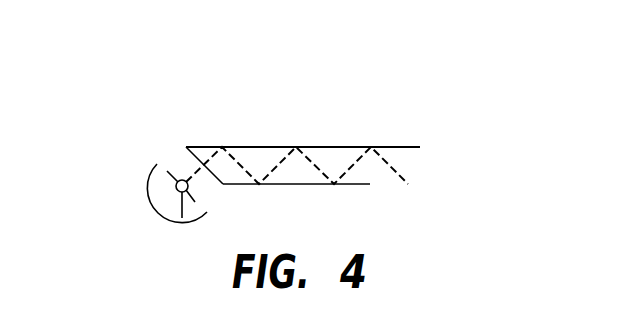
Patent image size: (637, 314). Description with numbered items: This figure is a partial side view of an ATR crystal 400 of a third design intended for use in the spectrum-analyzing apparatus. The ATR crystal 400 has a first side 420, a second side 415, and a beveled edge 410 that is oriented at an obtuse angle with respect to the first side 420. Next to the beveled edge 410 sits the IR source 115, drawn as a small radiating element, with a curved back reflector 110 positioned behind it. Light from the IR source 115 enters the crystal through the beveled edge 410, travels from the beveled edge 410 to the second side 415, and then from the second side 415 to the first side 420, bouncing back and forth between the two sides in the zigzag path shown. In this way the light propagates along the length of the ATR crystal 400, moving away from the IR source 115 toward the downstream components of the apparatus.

The ATR crystal 400 is at (333, 130).
The beveled edge 410 is at (188, 155).
The second side 415 is at (235, 147).
The first side 420 is at (268, 184).
The back reflector 110 is at (152, 192).
The IR source 115 is at (182, 218).